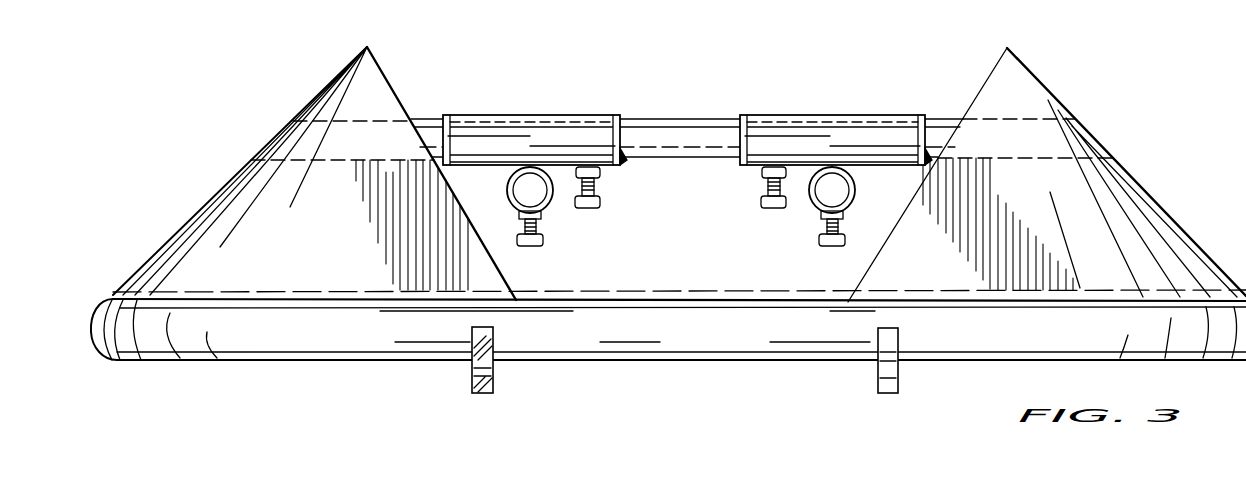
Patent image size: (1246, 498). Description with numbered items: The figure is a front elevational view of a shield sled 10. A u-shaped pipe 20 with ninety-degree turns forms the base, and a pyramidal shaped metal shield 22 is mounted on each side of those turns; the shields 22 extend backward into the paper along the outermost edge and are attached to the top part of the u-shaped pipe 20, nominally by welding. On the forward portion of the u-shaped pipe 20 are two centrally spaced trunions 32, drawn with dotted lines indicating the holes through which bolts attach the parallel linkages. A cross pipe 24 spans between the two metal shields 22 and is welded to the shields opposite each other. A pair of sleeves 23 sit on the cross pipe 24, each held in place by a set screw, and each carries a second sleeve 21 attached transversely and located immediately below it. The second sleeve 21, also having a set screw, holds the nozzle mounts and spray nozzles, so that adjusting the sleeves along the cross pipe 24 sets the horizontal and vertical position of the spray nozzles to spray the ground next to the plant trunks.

The shield sled 10 is at (668, 215).
The u-shaped pipe 20 is at (709, 336).
The second sleeve 21 is at (553, 198).
The pyramidal shaped metal shield 22 is at (353, 225).
The sleeve 23 is at (592, 82).
The cross pipe 24 is at (688, 118).
The trunion 32 is at (470, 382).